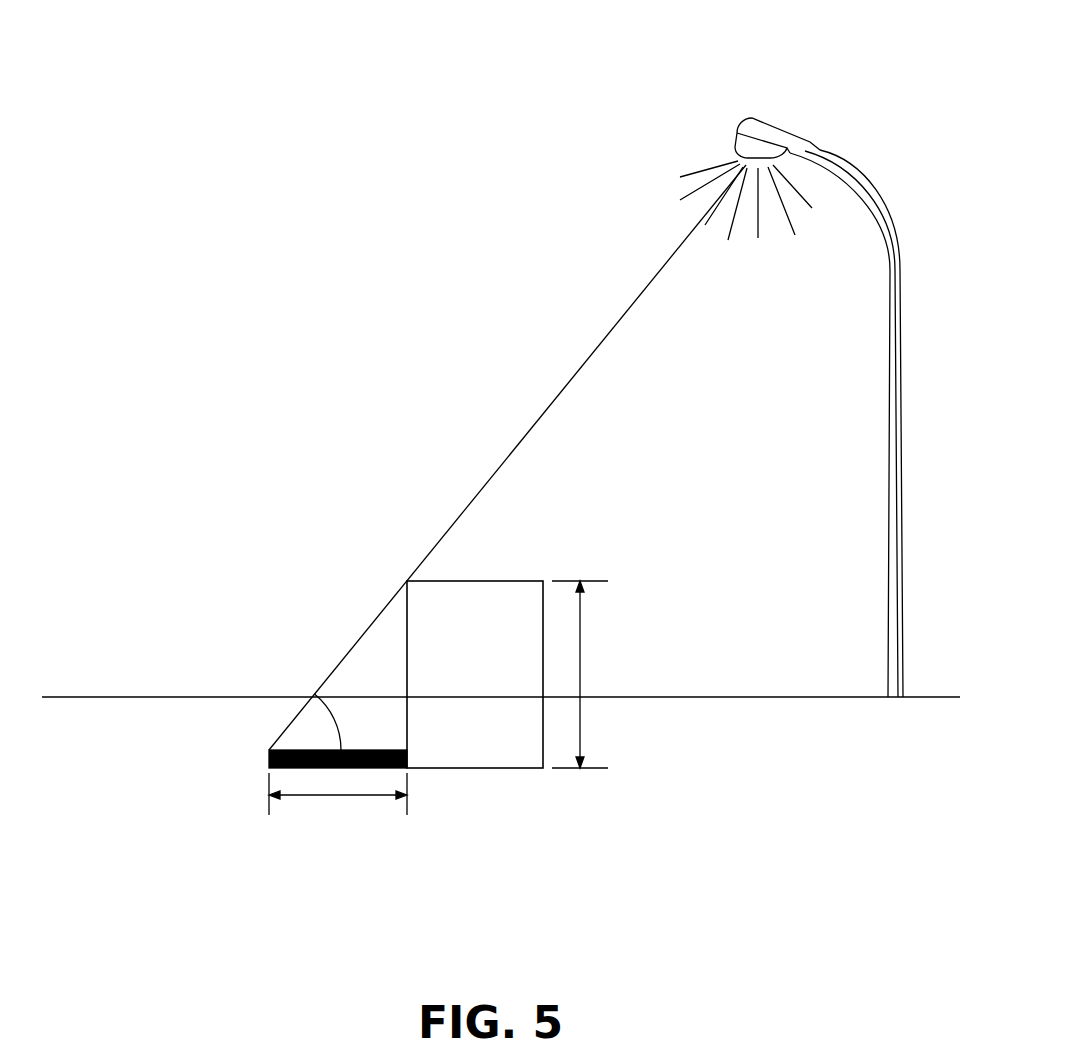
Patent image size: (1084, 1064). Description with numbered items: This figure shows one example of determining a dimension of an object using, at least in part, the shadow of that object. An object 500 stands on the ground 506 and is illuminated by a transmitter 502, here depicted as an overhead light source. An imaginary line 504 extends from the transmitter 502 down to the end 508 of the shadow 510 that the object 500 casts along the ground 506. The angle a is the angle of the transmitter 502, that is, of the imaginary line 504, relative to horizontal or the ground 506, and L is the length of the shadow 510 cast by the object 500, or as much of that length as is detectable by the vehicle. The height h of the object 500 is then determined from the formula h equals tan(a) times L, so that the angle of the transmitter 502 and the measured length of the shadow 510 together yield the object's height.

The object 500 is at (507, 770).
The transmitter 502 is at (722, 112).
The imaginary line 504 is at (560, 387).
The ground 506 is at (183, 720).
The end of the shadow 508 is at (265, 762).
The shadow 510 is at (380, 770).